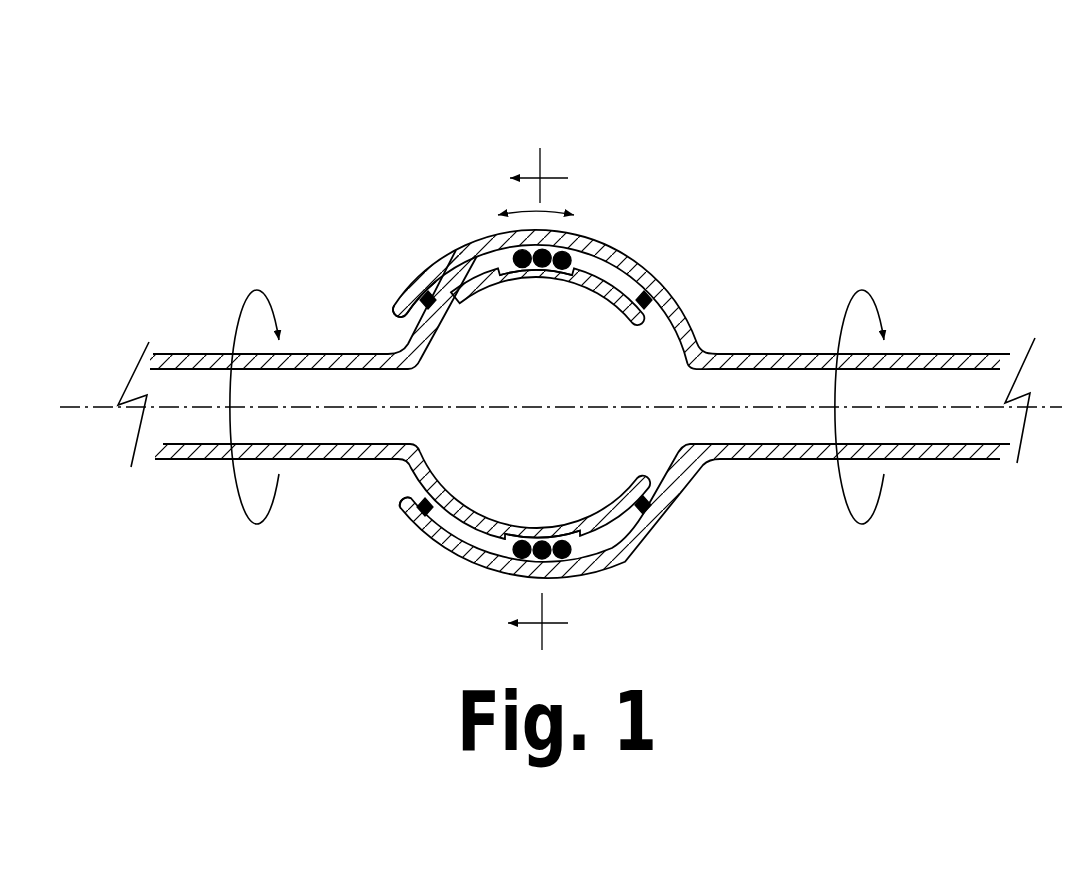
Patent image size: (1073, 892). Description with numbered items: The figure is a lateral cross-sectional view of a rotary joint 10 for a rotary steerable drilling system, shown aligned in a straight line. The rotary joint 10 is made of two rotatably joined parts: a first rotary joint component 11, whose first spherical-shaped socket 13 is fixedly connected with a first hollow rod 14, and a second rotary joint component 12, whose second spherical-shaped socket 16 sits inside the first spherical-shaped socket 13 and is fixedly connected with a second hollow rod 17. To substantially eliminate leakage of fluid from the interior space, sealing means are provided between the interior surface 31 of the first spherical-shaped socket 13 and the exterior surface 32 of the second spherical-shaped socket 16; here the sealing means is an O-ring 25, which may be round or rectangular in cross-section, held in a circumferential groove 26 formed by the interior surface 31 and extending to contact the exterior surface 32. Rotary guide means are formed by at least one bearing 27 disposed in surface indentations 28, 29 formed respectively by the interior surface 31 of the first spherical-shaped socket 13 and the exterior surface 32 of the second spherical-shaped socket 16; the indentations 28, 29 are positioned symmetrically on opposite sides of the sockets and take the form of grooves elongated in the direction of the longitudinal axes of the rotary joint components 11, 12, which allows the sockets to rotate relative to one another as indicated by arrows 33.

The rotary joint 10 is at (771, 128).
The first rotary joint component 11 is at (788, 305).
The second rotary joint component 12 is at (238, 557).
The first spherical-shaped socket 13 is at (497, 213).
The first hollow rod 14 is at (963, 353).
The second spherical-shaped socket 16 is at (398, 510).
The second hollow rod 17 is at (219, 352).
The O-ring 25 is at (408, 292).
The circumferential groove 26 is at (398, 306).
The bearing 27 is at (452, 248).
The surface indentation 28 is at (608, 268).
The surface indentation 29 is at (578, 248).
The interior surface 31 is at (425, 262).
The exterior surface 32 is at (421, 283).
The arrows 33 is at (577, 235).